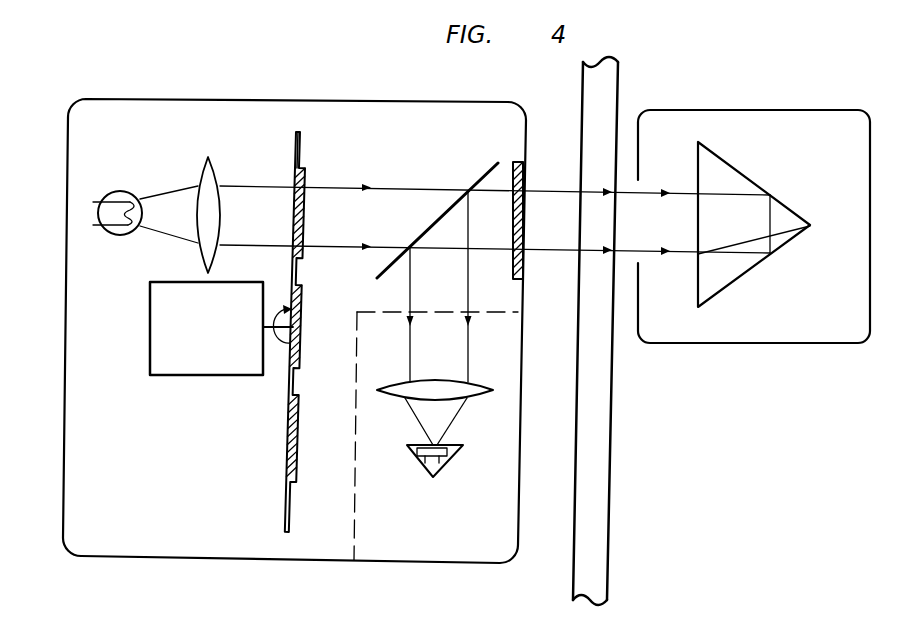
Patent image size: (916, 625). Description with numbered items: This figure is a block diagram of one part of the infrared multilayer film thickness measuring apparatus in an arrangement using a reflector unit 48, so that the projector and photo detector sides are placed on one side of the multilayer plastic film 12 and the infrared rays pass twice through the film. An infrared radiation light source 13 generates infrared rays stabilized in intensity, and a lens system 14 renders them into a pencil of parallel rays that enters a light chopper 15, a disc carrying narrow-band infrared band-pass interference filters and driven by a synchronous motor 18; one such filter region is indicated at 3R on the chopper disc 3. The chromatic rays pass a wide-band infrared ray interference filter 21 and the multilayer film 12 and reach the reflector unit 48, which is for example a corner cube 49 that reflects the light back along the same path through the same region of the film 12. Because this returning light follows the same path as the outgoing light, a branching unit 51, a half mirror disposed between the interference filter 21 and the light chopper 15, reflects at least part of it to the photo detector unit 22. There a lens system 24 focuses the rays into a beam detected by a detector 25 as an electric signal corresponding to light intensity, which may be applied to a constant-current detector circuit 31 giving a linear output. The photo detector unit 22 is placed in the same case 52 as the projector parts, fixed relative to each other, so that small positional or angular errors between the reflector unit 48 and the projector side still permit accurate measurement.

The rotary filter plate 3 is at (296, 318).
The filter region 3R is at (308, 181).
The multilayer plastic film 12 is at (603, 502).
The infrared radiation light source 13 is at (123, 193).
The lens system 14 is at (210, 178).
The light chopper 15 is at (295, 142).
The synchronous motor 18 is at (218, 367).
The wide-band infrared ray interference filter 21 is at (523, 168).
The photo detector unit 22 is at (513, 348).
The lens system 24 is at (473, 390).
The detector 25 is at (447, 463).
The detector circuit 31 is at (358, 523).
The reflector unit 48 is at (860, 227).
The corner cube 49 is at (735, 272).
The branching unit 51 is at (495, 165).
The case 52 is at (145, 558).